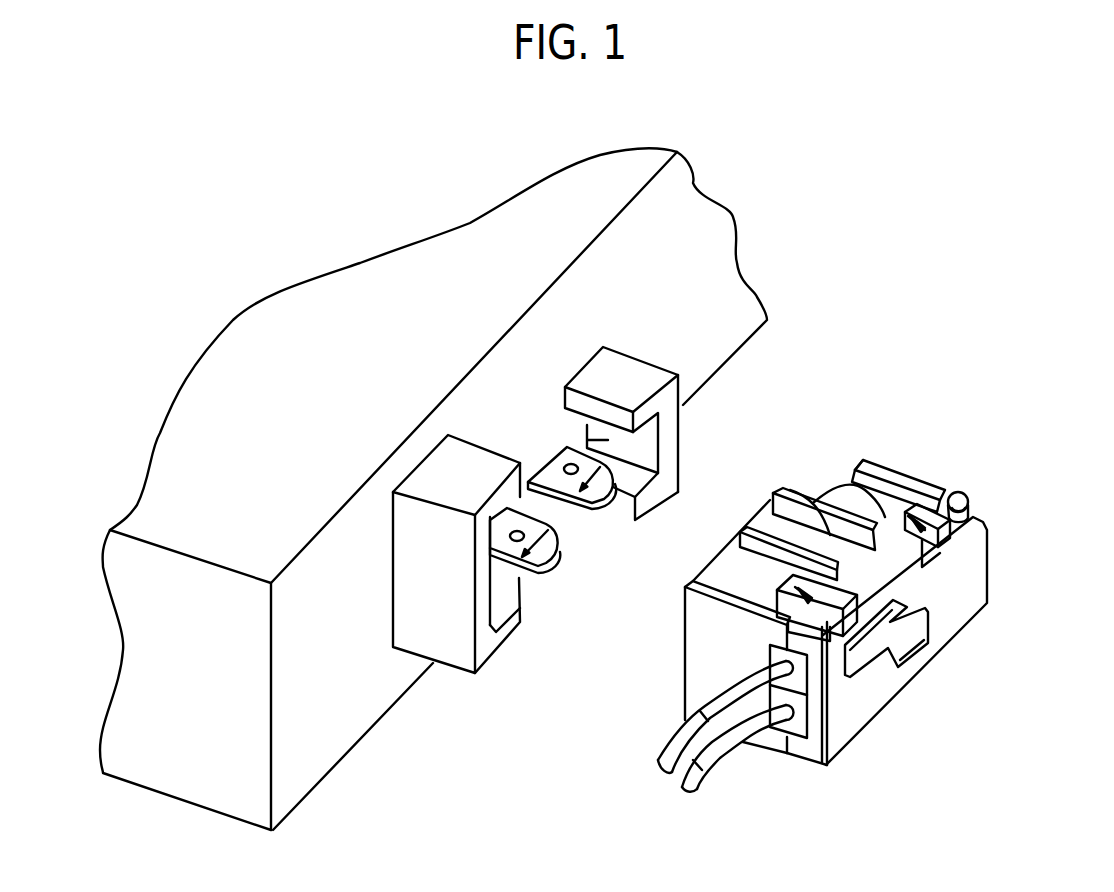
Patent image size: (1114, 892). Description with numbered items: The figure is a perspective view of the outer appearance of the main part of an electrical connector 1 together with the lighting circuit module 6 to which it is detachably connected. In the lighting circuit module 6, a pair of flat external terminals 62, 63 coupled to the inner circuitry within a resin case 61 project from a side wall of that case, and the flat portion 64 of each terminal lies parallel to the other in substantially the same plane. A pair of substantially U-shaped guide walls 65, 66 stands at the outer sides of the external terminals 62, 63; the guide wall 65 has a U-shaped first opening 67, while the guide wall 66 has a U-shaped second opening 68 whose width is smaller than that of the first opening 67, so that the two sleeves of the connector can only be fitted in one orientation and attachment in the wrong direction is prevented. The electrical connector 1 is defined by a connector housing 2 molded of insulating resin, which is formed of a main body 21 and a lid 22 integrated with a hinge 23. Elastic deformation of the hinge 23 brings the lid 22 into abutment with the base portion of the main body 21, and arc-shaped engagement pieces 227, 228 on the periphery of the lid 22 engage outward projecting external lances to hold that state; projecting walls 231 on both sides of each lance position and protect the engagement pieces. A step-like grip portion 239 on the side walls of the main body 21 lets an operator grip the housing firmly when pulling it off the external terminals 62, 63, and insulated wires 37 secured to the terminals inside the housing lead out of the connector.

The electrical connector 1 is at (837, 639).
The connector housing 2 is at (873, 720).
The main body 21 is at (683, 692).
The lid 22 is at (870, 520).
The hinge 23 is at (968, 500).
The arc-shaped engagement piece 227 is at (783, 580).
The arc-shaped engagement piece 228 is at (850, 485).
The projecting wall 231 is at (870, 464).
The step-like grip portion 239 is at (773, 517).
The insulated wire 37 is at (730, 753).
The lighting circuit module 6 is at (735, 208).
The resin case 61 is at (735, 293).
The external terminal 62 is at (582, 505).
The external terminal 63 is at (550, 555).
The flat portion 64 is at (568, 507).
The guide wall 65 is at (433, 665).
The guide wall 66 is at (683, 425).
The first opening 67 is at (512, 625).
The second opening 68 is at (608, 440).